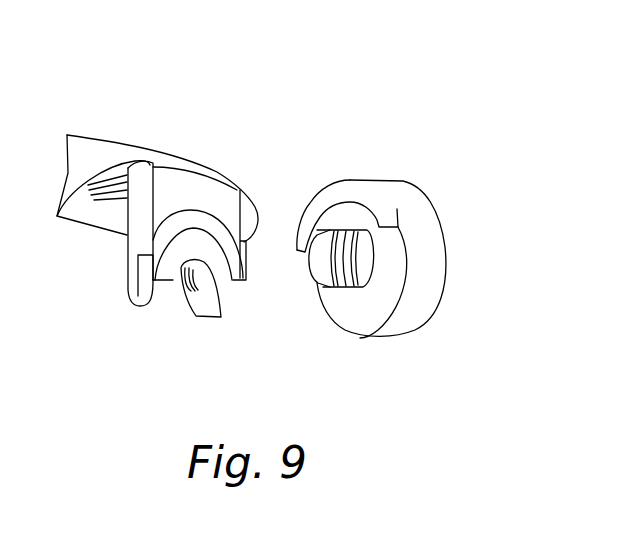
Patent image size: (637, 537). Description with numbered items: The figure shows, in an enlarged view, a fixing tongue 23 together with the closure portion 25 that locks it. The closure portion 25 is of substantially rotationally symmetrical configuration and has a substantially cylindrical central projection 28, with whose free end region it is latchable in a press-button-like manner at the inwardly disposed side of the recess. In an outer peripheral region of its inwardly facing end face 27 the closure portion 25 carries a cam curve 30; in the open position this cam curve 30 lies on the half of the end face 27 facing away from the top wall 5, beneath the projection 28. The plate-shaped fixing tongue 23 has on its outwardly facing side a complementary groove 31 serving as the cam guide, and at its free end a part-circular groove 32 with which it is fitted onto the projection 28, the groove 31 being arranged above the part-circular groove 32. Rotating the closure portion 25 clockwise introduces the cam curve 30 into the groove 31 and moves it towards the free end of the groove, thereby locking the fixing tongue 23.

The top wall 5 is at (87, 158).
The fixing tongue 23 is at (190, 190).
The closure portion 25 is at (437, 260).
The inwardly facing end face 27 is at (360, 305).
The central projection 28 is at (338, 283).
The cam curve 30 is at (347, 178).
The groove 31 is at (183, 227).
The part-circular groove 32 is at (184, 289).